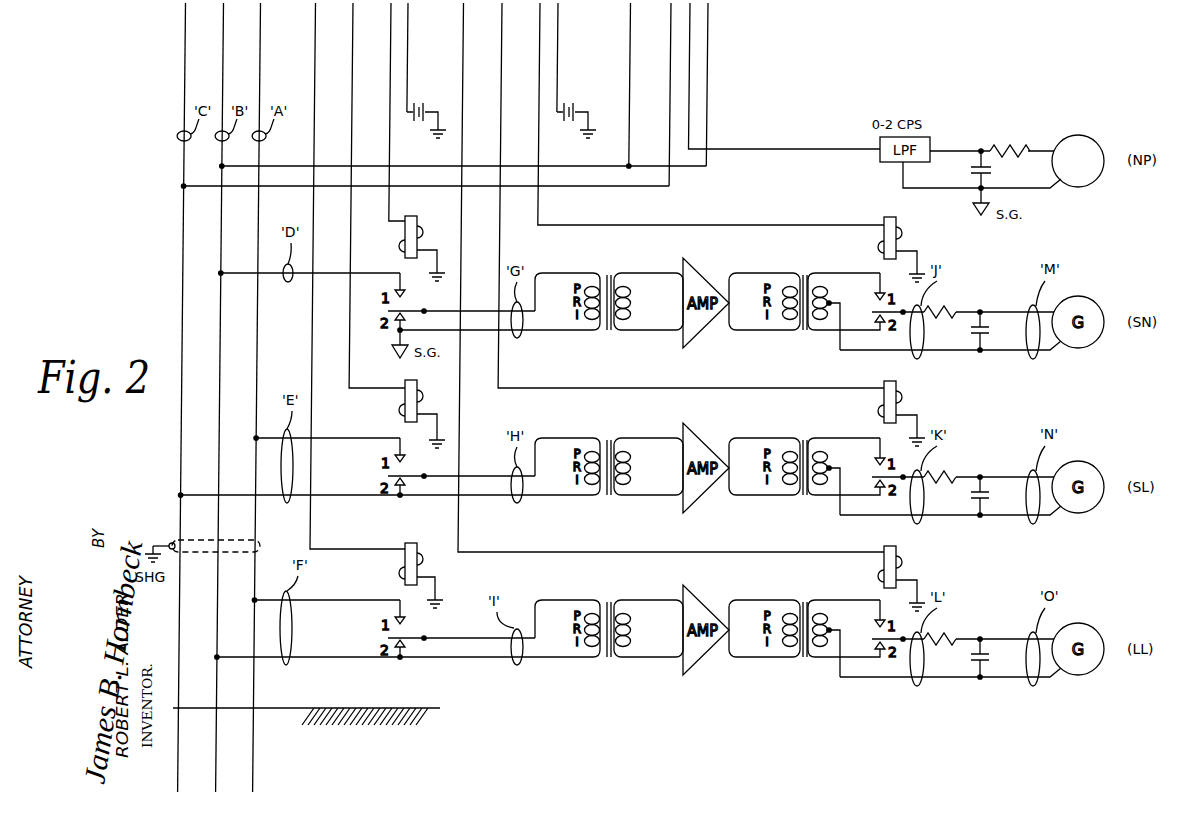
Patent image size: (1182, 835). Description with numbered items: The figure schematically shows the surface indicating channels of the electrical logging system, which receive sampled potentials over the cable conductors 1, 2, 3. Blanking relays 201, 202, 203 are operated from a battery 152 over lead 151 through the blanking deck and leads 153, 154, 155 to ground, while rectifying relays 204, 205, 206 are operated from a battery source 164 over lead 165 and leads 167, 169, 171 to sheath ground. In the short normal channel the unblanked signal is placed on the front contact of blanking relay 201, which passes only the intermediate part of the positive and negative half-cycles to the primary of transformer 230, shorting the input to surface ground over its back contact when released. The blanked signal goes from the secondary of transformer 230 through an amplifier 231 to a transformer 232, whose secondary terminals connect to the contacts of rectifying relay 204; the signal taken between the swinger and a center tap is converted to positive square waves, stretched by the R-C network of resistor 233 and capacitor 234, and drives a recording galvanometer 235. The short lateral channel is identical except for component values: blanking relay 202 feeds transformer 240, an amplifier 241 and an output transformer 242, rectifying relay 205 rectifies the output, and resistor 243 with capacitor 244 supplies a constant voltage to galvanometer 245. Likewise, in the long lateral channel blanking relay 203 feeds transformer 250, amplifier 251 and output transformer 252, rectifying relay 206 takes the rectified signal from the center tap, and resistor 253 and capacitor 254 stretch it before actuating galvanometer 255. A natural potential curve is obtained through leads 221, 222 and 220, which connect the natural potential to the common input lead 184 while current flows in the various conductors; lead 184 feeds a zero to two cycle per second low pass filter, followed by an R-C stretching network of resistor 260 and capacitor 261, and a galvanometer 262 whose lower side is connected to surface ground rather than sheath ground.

The conductor 1 is at (256, 380).
The conductor 2 is at (219, 357).
The conductor 3 is at (182, 338).
The lead 151 is at (409, 50).
The battery 152 is at (418, 100).
The lead 153 is at (390, 68).
The lead 154 is at (352, 92).
The lead 155 is at (315, 92).
The battery source 164 is at (567, 100).
The lead 165 is at (559, 32).
The lead 167 is at (539, 60).
The lead 169 is at (502, 102).
The lead 171 is at (464, 92).
The input lead 184 is at (689, 82).
The blanking relay 201 is at (420, 226).
The blanking relay 202 is at (420, 392).
The blanking relay 203 is at (420, 549).
The rectifying relay 204 is at (884, 222).
The rectifying relay 205 is at (897, 390).
The rectifying relay 206 is at (897, 556).
The lead 220 is at (669, 70).
The lead 221 is at (709, 46).
The lead 222 is at (628, 84).
The transformer 230 is at (607, 270).
The amplifier 231 is at (692, 263).
The transformer 232 is at (800, 270).
The resistor 233 is at (950, 305).
The capacitor 234 is at (990, 330).
The recording galvanometer 235 is at (1096, 302).
The transformer 240 is at (609, 453).
The amplifier 241 is at (706, 462).
The output transformer 242 is at (817, 463).
The resistor 243 is at (958, 461).
The capacitor 244 is at (999, 496).
The galvanometer 245 is at (1093, 476).
The transformer 250 is at (609, 613).
The amplifier 251 is at (706, 622).
The output transformer 252 is at (817, 623).
The resistor 253 is at (958, 623).
The capacitor 254 is at (999, 658).
The galvanometer 255 is at (1093, 638).
The resistor 260 is at (1005, 147).
The capacitor 261 is at (972, 171).
The galvanometer 262 is at (1092, 140).